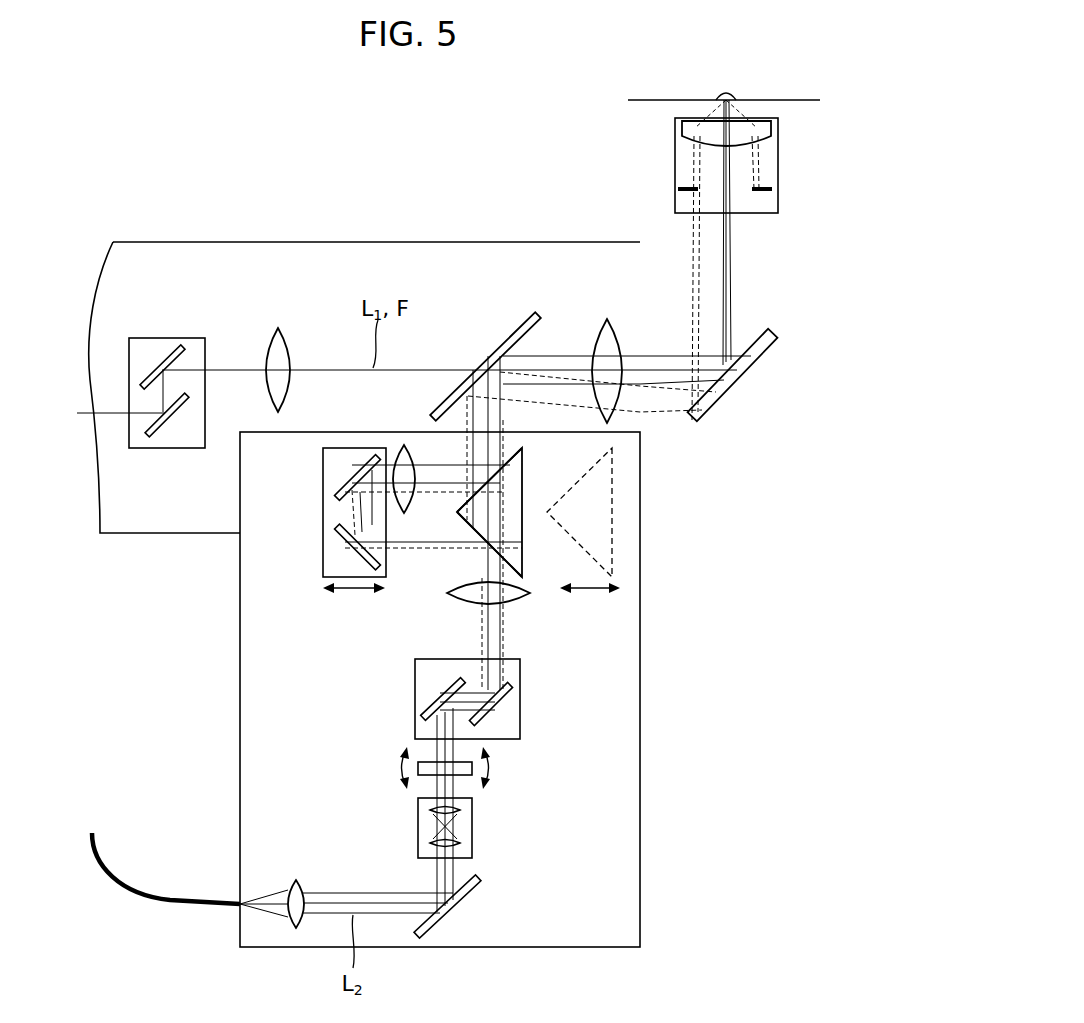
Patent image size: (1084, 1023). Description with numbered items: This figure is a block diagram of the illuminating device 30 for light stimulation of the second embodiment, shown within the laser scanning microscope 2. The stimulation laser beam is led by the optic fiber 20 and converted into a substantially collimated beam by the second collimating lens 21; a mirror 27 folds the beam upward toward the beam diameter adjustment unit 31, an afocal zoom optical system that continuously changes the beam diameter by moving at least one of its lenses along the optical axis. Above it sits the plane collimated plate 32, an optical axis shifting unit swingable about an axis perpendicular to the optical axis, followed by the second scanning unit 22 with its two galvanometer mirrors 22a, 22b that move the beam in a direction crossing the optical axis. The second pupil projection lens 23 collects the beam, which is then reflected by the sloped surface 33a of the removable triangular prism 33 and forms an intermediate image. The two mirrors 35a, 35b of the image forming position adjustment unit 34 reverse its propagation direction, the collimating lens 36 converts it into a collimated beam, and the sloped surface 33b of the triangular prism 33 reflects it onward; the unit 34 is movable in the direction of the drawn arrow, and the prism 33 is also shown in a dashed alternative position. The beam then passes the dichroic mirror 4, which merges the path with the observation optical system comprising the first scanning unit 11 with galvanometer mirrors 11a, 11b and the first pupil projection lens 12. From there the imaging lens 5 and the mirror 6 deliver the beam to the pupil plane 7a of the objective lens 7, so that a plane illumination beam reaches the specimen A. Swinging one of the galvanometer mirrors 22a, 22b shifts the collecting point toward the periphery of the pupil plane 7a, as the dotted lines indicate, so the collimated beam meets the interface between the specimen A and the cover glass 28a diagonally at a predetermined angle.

The laser scanning microscope 2 is at (705, 665).
The illuminating device 30 is at (640, 865).
The cover glass 28a is at (800, 97).
The specimen A is at (729, 96).
The objective lens 7 is at (778, 170).
The pupil plane 7a is at (772, 193).
The mirror 6 is at (718, 405).
The imaging lens 5 is at (607, 318).
The dichroic mirror 4 is at (510, 338).
The first pupil projection lens 12 is at (278, 328).
The first scanning unit 11 is at (190, 338).
The galvanometer mirror 11a is at (158, 440).
The galvanometer mirror 11b is at (160, 365).
The collimating lens 36 is at (403, 445).
The image forming position adjustment unit 34 is at (302, 575).
The mirror 35a is at (338, 537).
The mirror 35b is at (338, 493).
The triangular prism 33 is at (525, 490).
The sloped surface 33a is at (520, 577).
The sloped surface 33b is at (520, 448).
The second pupil projection lens 23 is at (515, 600).
The second scanning unit 22 is at (520, 683).
The galvanometer mirror 22a is at (430, 692).
The galvanometer mirror 22b is at (500, 715).
The plane collimated plate 32 is at (423, 778).
The beam diameter adjustment unit 31 is at (472, 830).
The mirror 27 is at (478, 893).
The second collimating lens 21 is at (296, 930).
The optic fiber 20 is at (175, 905).